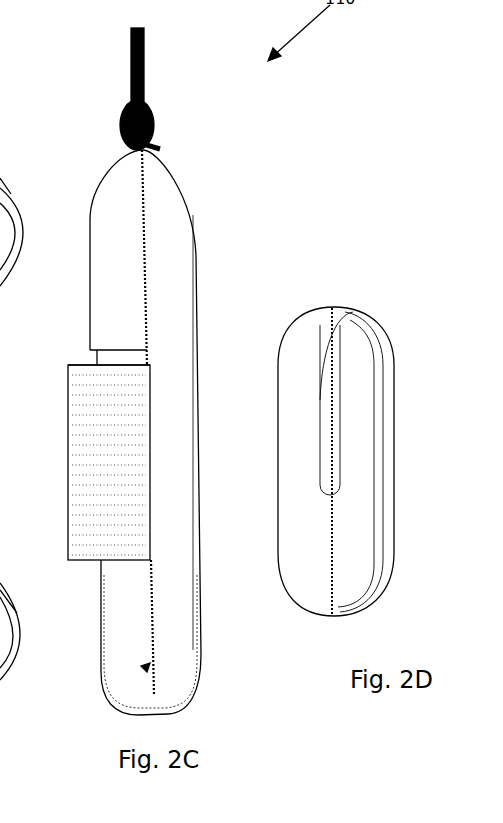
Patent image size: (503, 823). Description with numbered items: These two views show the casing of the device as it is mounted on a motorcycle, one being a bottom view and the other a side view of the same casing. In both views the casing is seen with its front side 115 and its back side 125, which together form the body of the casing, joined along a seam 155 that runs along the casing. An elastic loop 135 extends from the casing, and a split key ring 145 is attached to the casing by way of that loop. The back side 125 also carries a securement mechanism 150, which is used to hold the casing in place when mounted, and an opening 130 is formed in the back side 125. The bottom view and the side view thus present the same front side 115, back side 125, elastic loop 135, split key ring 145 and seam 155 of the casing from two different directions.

In FIG. 2C, the front side 115 is at (182, 592).
In FIG. 2D, the front side 115 is at (297, 507).
In FIG. 2C, the back side 125 is at (110, 207).
In FIG. 2D, the back side 125 is at (358, 523).
In FIG. 2C, the opening 130 is at (97, 351).
In FIG. 2C, the elastic loop 135 is at (140, 147).
In FIG. 2D, the elastic loop 135 is at (237, 273).
In FIG. 2C, the split key ring 145 is at (143, 60).
In FIG. 2D, the split key ring 145 is at (260, 257).
In FIG. 2C, the securement mechanism 150 is at (68, 512).
In FIG. 2D, the securement mechanism 150 is at (398, 462).
In FIG. 2C, the seam 155 is at (148, 665).
In FIG. 2D, the seam 155 is at (330, 345).